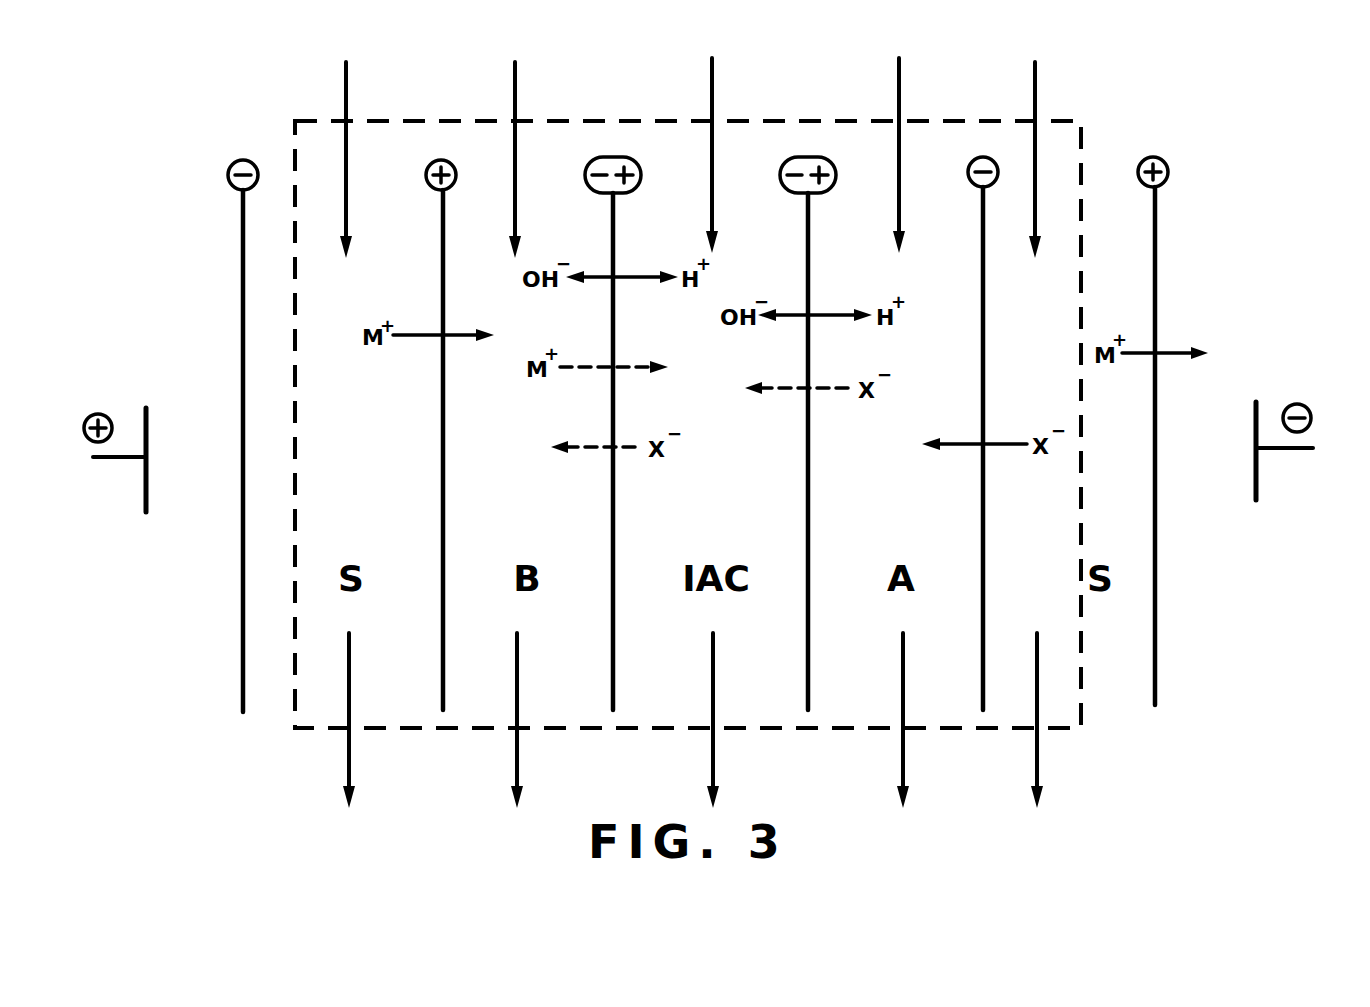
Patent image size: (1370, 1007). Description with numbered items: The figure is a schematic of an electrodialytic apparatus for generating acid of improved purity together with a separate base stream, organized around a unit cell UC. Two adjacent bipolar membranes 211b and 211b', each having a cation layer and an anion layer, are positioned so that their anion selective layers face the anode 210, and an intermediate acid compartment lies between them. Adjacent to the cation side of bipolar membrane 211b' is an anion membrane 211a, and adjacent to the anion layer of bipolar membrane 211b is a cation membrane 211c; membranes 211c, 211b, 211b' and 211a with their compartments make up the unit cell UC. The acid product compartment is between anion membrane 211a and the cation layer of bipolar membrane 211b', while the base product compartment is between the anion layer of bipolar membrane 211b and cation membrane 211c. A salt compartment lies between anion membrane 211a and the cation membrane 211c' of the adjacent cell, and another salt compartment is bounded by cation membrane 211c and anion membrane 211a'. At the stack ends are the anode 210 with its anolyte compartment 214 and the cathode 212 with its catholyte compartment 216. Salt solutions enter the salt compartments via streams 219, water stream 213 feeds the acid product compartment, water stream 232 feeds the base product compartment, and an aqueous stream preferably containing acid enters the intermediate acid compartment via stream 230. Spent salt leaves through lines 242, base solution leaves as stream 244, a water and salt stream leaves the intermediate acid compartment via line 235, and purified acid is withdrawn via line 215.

The unit cell UC is at (1081, 118).
The salt feed streams 219 is at (343, 100).
The base compartment water feed stream 232 is at (513, 100).
The intermediate acid compartment feed stream 230 is at (710, 112).
The acid compartment water feed stream 213 is at (896, 112).
The anion membrane 211a' is at (200, 436).
The cation membrane 211c is at (410, 435).
The bipolar membrane 211b is at (589, 433).
The bipolar membrane 211b' is at (784, 433).
The anion membrane 211a is at (955, 433).
The cation membrane of adjacent cell 211c' is at (1122, 431).
The anolyte compartment 214 is at (190, 425).
The anode 210 is at (120, 460).
The catholyte compartment 216 is at (1225, 388).
The cathode 212 is at (1283, 450).
The spent salt lines 242 is at (352, 745).
The base product stream 244 is at (520, 745).
The intermediate acid compartment outlet line 235 is at (716, 745).
The acid product line 215 is at (906, 745).